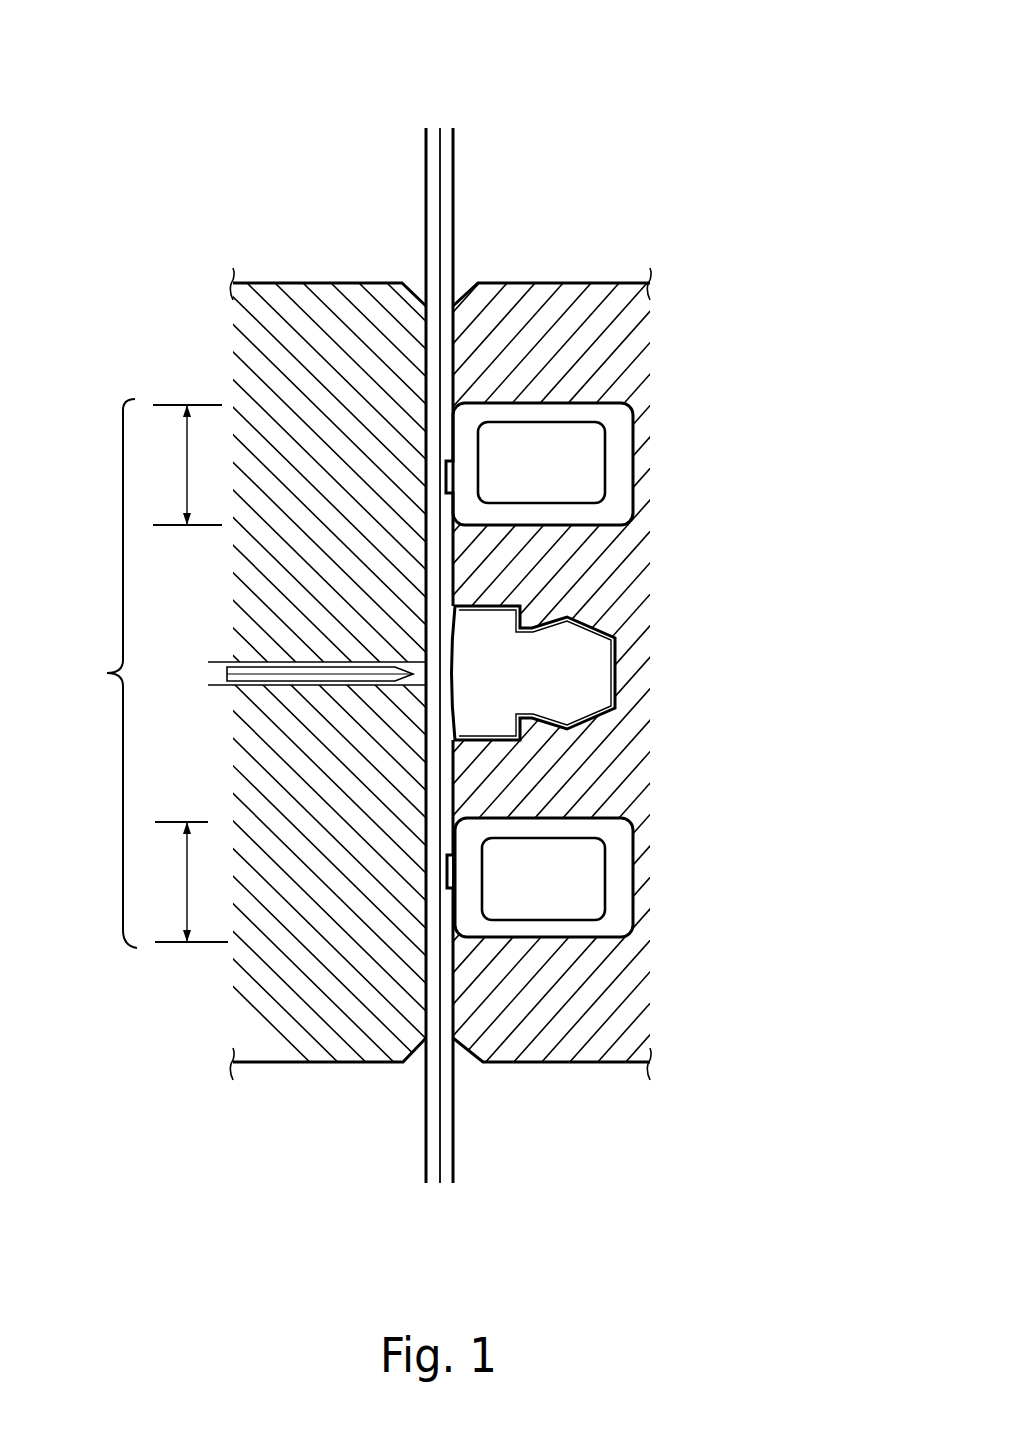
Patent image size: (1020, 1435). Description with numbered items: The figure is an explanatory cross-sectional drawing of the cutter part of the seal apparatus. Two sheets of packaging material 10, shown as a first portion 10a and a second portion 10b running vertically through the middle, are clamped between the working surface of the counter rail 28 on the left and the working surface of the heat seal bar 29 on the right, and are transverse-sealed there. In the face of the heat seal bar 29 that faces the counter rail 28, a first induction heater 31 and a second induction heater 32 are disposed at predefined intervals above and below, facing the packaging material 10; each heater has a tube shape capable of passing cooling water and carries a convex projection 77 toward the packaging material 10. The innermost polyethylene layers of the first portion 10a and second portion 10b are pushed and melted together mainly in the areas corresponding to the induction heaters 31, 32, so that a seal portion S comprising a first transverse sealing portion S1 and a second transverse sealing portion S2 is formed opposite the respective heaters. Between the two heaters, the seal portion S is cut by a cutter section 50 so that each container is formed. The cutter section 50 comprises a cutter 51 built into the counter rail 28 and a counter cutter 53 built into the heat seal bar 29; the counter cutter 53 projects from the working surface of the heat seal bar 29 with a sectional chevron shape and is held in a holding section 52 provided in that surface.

The packaging material 10 is at (502, 62).
The first portion 10a is at (447, 131).
The second portion 10b is at (432, 131).
The counter rail 28 is at (298, 300).
The heat seal bar 29 is at (570, 300).
The first induction heater 31 is at (623, 455).
The second induction heater 32 is at (620, 883).
The cutter section 50 is at (228, 666).
The cutter 51 is at (233, 685).
The stepped cavity 52 is at (597, 622).
The counter cutter 53 is at (565, 683).
The convex projection 77 is at (450, 473).
The seal portion S is at (107, 673).
The first transverse sealing portion S1 is at (182, 465).
The second transverse sealing portion S2 is at (185, 882).